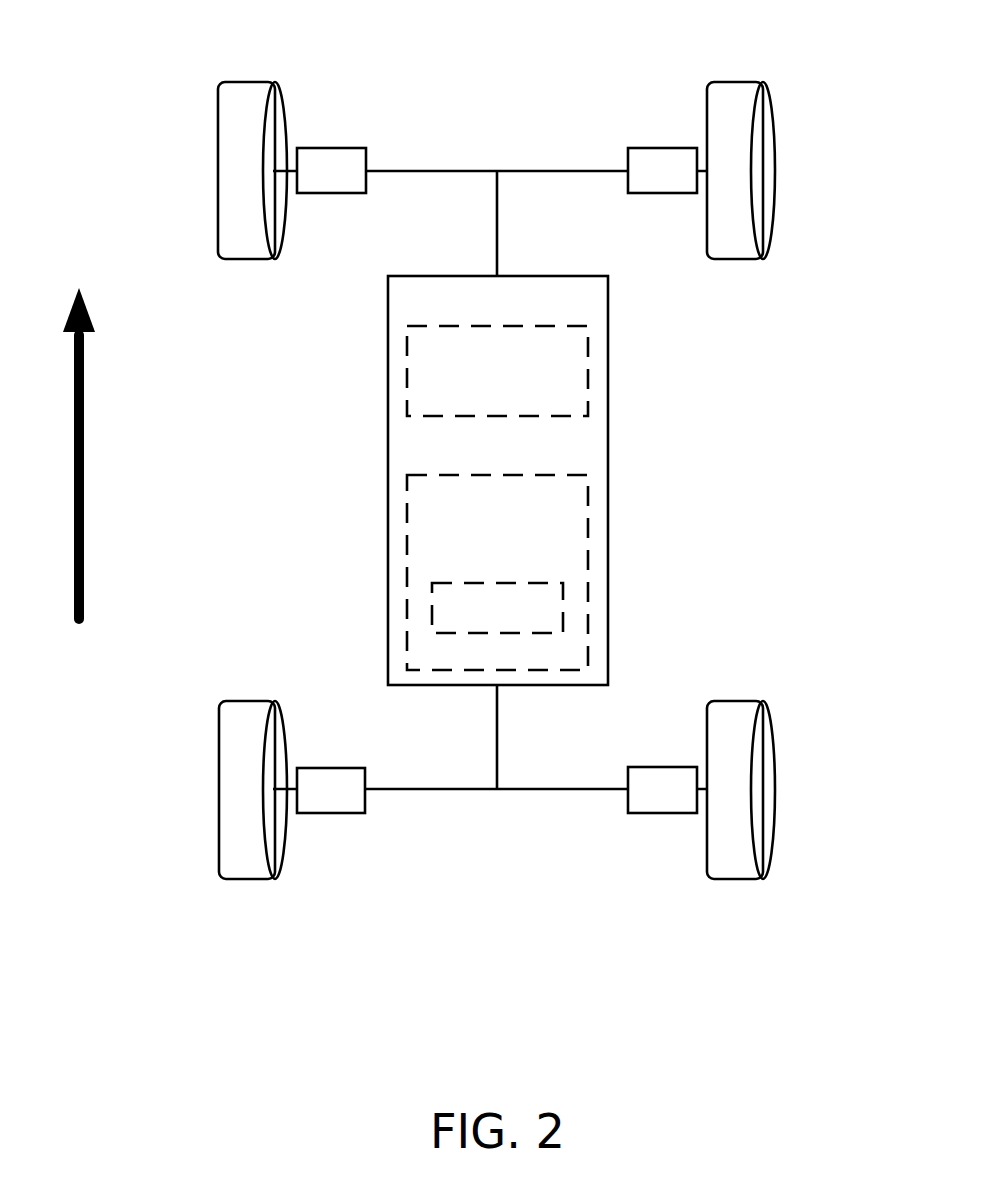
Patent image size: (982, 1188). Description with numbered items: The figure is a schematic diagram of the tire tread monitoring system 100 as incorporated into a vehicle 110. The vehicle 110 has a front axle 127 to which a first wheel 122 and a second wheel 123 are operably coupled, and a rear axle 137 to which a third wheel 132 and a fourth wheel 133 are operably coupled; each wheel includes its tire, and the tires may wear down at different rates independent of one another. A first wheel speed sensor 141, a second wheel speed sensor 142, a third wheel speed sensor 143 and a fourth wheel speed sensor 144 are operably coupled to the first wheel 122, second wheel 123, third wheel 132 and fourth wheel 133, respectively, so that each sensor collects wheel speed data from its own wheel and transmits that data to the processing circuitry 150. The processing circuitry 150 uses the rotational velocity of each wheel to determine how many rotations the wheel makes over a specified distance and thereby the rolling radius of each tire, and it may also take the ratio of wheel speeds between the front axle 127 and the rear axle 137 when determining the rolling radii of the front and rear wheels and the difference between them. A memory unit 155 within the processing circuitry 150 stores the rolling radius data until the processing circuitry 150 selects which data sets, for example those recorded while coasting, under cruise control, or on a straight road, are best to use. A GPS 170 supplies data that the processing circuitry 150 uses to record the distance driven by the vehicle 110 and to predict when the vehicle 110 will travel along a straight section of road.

The tire tread monitoring system 100 is at (330, 1002).
The vehicle 110 is at (495, 222).
The first wheel 122 is at (257, 95).
The second wheel 123 is at (727, 97).
The front axle 127 is at (470, 170).
The third wheel 132 is at (248, 868).
The fourth wheel 133 is at (735, 863).
The rear axle 137 is at (516, 790).
The first wheel speed sensor 141 is at (330, 162).
The second wheel speed sensor 142 is at (660, 158).
The third wheel speed sensor 143 is at (327, 802).
The fourth wheel speed sensor 144 is at (665, 803).
The processing circuitry 150 is at (588, 503).
The memory unit 155 is at (563, 605).
The global positioning system (GPS) 170 is at (588, 365).